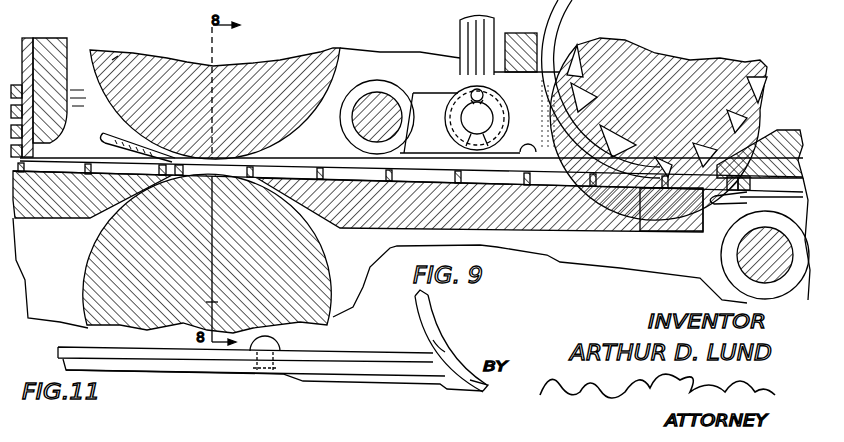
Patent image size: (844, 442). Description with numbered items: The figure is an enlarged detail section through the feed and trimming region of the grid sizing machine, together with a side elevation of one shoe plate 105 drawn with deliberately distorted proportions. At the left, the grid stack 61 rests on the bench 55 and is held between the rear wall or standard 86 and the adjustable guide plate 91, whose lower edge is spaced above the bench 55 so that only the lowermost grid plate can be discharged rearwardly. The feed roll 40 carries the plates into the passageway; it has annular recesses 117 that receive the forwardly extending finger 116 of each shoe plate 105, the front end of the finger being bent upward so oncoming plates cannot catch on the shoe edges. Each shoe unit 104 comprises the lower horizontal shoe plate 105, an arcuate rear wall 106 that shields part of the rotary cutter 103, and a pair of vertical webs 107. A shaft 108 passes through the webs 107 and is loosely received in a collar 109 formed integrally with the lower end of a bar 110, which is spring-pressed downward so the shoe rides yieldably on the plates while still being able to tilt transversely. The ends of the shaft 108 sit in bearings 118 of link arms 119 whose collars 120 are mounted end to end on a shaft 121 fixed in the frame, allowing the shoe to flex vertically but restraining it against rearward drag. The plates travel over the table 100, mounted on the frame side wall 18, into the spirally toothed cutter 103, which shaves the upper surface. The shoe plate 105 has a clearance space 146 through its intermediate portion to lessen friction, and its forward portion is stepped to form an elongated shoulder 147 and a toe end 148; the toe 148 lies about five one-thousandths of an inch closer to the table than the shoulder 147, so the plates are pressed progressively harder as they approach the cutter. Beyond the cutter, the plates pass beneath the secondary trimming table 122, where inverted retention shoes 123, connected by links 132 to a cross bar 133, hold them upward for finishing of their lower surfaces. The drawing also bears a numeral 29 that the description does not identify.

In FIG. 9, the guide plate 91 is at (29, 38).
In FIG. 9, the rear wall or standard 86 is at (62, 40).
In FIG. 9, the annular recesses 117 is at (117, 58).
In FIG. 9, the feed roll 40 is at (334, 54).
In FIG. 9, the collars 120 is at (382, 82).
In FIG. 9, the shaft 121 is at (363, 132).
In FIG. 9, the link arms 119 is at (428, 92).
In FIG. 9, the shoe units 104 is at (452, 76).
In FIG. 11, the shoe units 104 is at (441, 339).
In FIG. 9, the shaft 108 is at (484, 124).
In FIG. 9, the collar 109 is at (498, 113).
In FIG. 9, the vertical flanges or webs 107 is at (458, 64).
In FIG. 9, the bar 110 is at (521, 40).
In FIG. 9, the arcuate rear wall 106 is at (566, 14).
In FIG. 11, the arcuate rear wall 106 is at (423, 310).
In FIG. 9, the rotary cutter 103 is at (663, 121).
In FIG. 9, the bearings 118 is at (540, 87).
In FIG. 9, the secondary trimming table 122 is at (790, 130).
In FIG. 9, the clearance space 146 is at (437, 166).
In FIG. 11, the clearance space 146 is at (157, 373).
In FIG. 9, the shoe plate 105 is at (493, 176).
In FIG. 11, the shoe plate 105 is at (330, 377).
In FIG. 9, the shoulder 147 is at (568, 186).
In FIG. 11, the shoulder 147 is at (388, 385).
In FIG. 9, the toe end 148 is at (622, 189).
In FIG. 11, the toe end 148 is at (462, 391).
In FIG. 9, the retention shoes 123 is at (735, 204).
In FIG. 9, the finger 116 is at (103, 139).
In FIG. 9, the bench 55 is at (58, 206).
In FIG. 9, the ball 29 is at (333, 317).
In FIG. 9, the grid stack 61 is at (388, 182).
In FIG. 9, the table 100 is at (668, 233).
In FIG. 9, the side wall 18 is at (605, 264).
In FIG. 9, the links 132 is at (788, 284).
In FIG. 9, the cross bar 133 is at (742, 268).